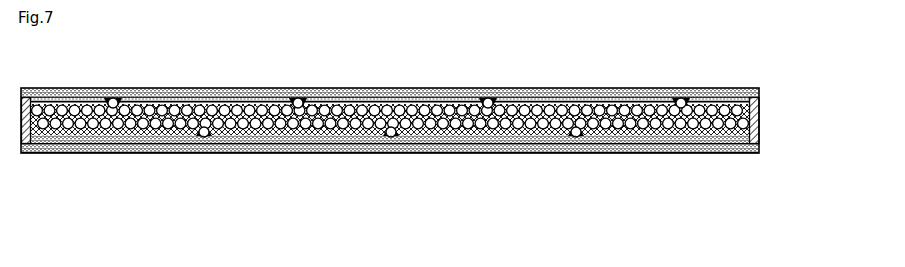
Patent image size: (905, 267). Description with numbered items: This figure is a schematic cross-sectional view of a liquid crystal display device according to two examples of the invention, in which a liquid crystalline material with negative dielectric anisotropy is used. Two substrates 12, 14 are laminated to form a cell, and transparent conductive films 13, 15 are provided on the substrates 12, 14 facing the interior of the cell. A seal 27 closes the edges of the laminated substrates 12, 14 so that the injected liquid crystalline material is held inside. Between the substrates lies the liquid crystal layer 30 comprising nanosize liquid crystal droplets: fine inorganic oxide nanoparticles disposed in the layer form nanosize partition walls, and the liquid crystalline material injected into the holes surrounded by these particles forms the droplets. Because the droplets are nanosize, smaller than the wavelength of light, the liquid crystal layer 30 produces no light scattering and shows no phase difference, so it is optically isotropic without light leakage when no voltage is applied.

The substrate 12 is at (647, 93).
The transparent conductive film 13 is at (537, 135).
The substrate 14 is at (715, 152).
The transparent conductive film 15 is at (580, 103).
The seal 27 is at (758, 118).
The liquid crystal layer comprising nanosize liquid crystal droplets 30 is at (660, 143).